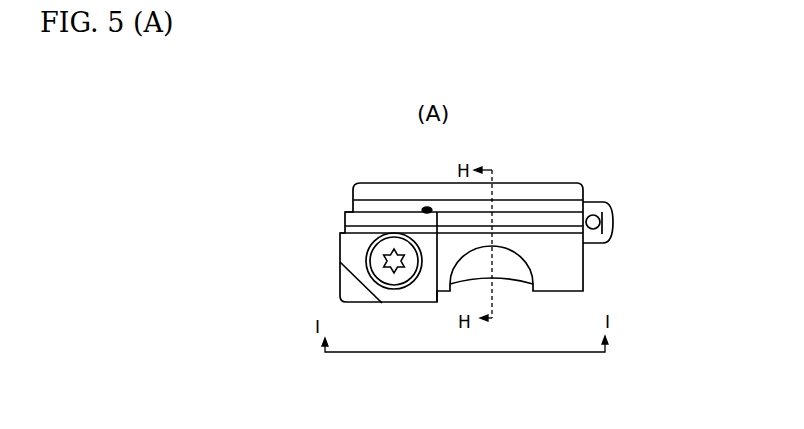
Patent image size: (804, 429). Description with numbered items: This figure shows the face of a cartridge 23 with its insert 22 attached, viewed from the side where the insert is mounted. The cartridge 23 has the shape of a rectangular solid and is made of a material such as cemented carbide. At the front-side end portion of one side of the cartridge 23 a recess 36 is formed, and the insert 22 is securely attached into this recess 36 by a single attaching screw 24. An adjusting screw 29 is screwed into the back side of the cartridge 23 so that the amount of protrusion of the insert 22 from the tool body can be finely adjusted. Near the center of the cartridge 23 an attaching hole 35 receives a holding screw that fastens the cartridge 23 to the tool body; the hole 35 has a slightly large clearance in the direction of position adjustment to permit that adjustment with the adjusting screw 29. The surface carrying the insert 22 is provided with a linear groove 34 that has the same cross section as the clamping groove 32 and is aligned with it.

The insert 22 is at (353, 252).
The cartridge 23 is at (568, 291).
The clamp screw 24 is at (396, 289).
The adjusting screw 29 is at (608, 202).
The clamping groove 32 is at (375, 218).
The linear groove 34 is at (530, 218).
The attaching hole 35 is at (505, 272).
The recess 36 is at (427, 210).